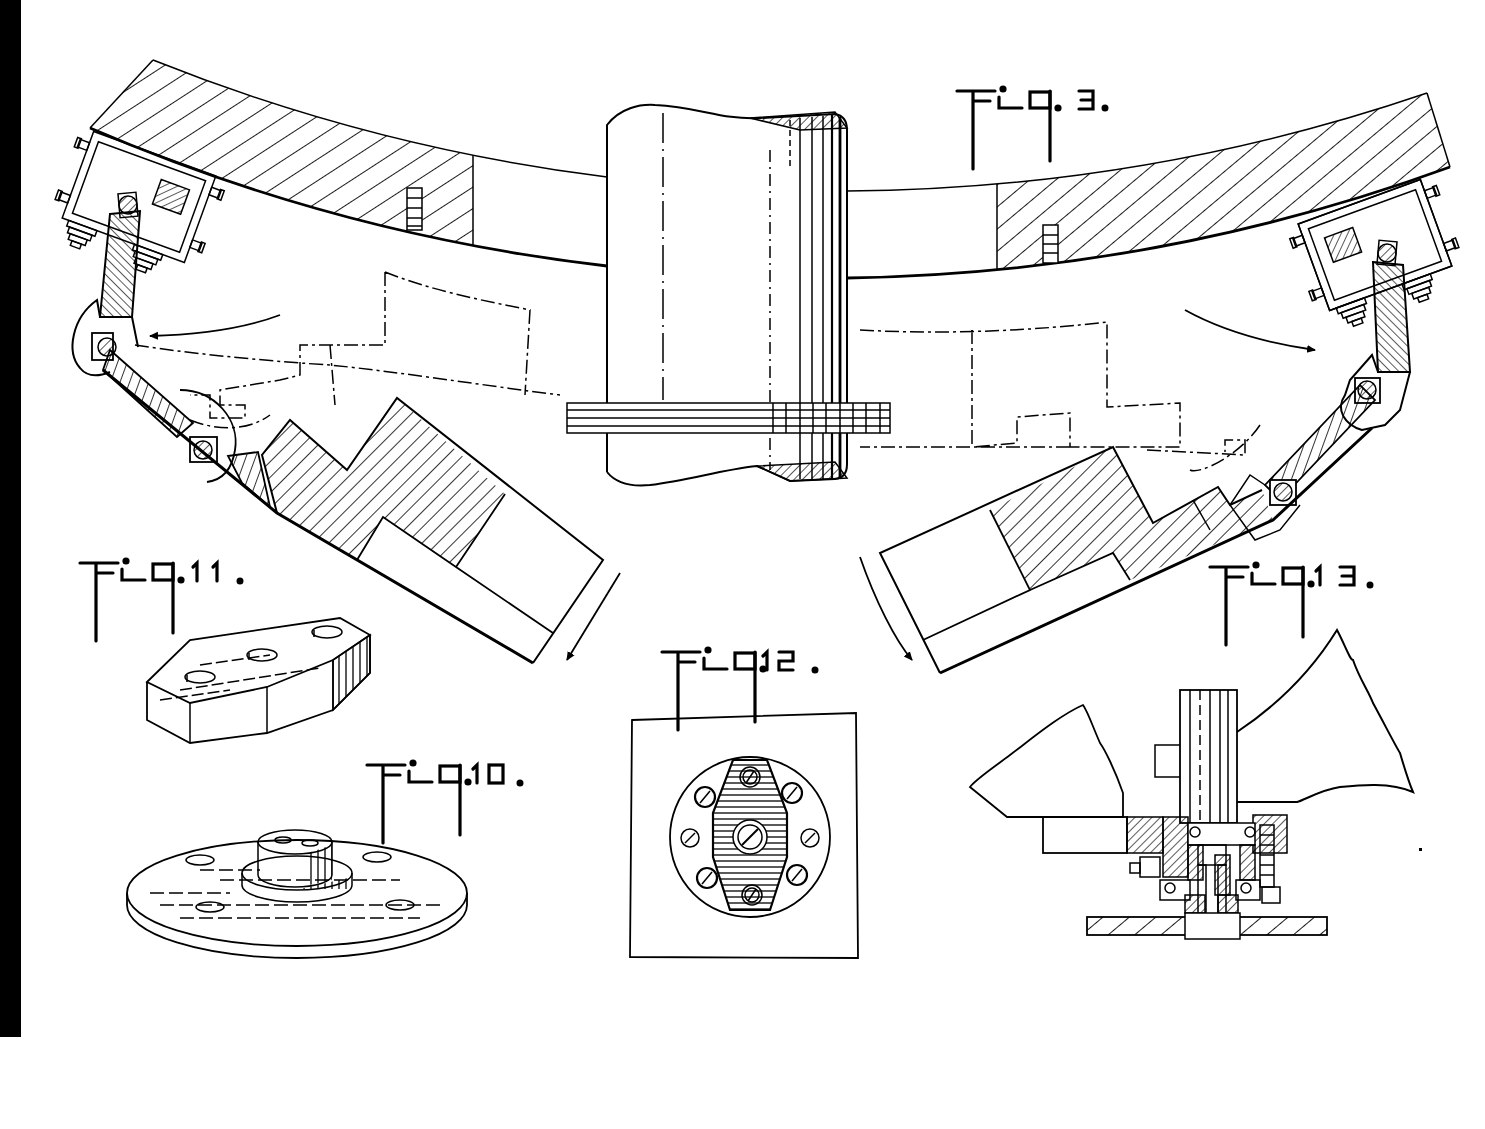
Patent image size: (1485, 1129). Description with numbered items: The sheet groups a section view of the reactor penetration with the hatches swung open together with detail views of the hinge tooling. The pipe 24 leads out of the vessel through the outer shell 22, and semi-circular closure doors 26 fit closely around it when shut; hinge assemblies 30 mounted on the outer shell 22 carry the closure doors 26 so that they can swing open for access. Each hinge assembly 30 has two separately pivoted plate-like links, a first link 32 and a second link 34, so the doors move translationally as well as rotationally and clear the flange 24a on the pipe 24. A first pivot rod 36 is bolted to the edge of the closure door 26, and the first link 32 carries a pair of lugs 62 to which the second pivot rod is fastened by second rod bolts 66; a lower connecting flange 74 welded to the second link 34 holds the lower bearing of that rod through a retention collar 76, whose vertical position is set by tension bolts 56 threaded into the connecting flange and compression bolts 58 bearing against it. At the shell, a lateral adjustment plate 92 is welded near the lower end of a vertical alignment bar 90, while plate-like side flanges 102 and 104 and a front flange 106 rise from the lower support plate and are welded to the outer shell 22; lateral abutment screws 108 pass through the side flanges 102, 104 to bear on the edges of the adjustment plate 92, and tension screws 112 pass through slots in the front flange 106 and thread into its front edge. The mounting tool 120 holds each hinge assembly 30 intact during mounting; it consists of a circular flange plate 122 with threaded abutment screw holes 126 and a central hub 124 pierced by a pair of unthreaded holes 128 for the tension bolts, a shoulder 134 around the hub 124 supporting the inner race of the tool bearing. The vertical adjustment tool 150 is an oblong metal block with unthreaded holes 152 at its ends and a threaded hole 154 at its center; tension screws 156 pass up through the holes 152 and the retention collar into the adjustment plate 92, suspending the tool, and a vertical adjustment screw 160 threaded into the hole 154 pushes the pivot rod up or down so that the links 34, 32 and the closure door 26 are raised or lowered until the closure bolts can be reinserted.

In FIG. 3, the outer shell 22 is at (368, 214).
In FIG. 3, the pipe 24 is at (653, 490).
In FIG. 3, the flange 24a is at (890, 403).
In FIG. 3, the closure doors 26 is at (520, 655).
In FIG. 3, the hinge assemblies 30 is at (110, 395).
In FIG. 3, the first link 32 is at (152, 425).
In FIG. 13, the first link 32 is at (1312, 685).
In FIG. 3, the second link 34 is at (108, 285).
In FIG. 13, the second link 34 is at (1040, 745).
In FIG. 3, the first pivot rod 36 is at (197, 458).
In FIG. 12, the tension bolts 56 is at (697, 792).
In FIG. 12, the compression bolts 58 is at (680, 838).
In FIG. 13, the lugs 62 is at (1245, 760).
In FIG. 13, the second rod bolts 66 is at (1160, 750).
In FIG. 13, the lower connecting flange 74 is at (1060, 843).
In FIG. 13, the retention collar 76 is at (1130, 882).
In FIG. 3, the vertical alignment bar 90 is at (178, 182).
In FIG. 3, the lateral adjustment plate 92 is at (1397, 213).
In FIG. 3, the side flange 102 is at (92, 130).
In FIG. 3, the side flange 104 is at (210, 193).
In FIG. 3, the front flange 106 is at (112, 203).
In FIG. 3, the lateral abutment screws 108 is at (65, 165).
In FIG. 3, the tension screws 112 is at (93, 252).
In FIG. 10, the mounting tool 120 is at (230, 828).
In FIG. 13, the mounting tool 120 is at (1173, 941).
In FIG. 10, the flange plate 122 is at (445, 872).
In FIG. 13, the flange plate 122 is at (1140, 937).
In FIG. 10, the central hub 124 is at (322, 832).
In FIG. 13, the central hub 124 is at (1225, 927).
In FIG. 10, the abutment screw holes 126 is at (205, 905).
In FIG. 10, the unthreaded holes 128 is at (308, 838).
In FIG. 10, the shoulder 134 is at (355, 875).
In FIG. 11, the vertical adjustment tool 150 is at (190, 648).
In FIG. 12, the vertical adjustment tool 150 is at (728, 782).
In FIG. 11, the unthreaded holes 152 is at (185, 676).
In FIG. 11, the threaded hole 154 is at (262, 650).
In FIG. 12, the tension screws 156 is at (758, 770).
In FIG. 12, the vertical adjustment screw 160 is at (770, 832).